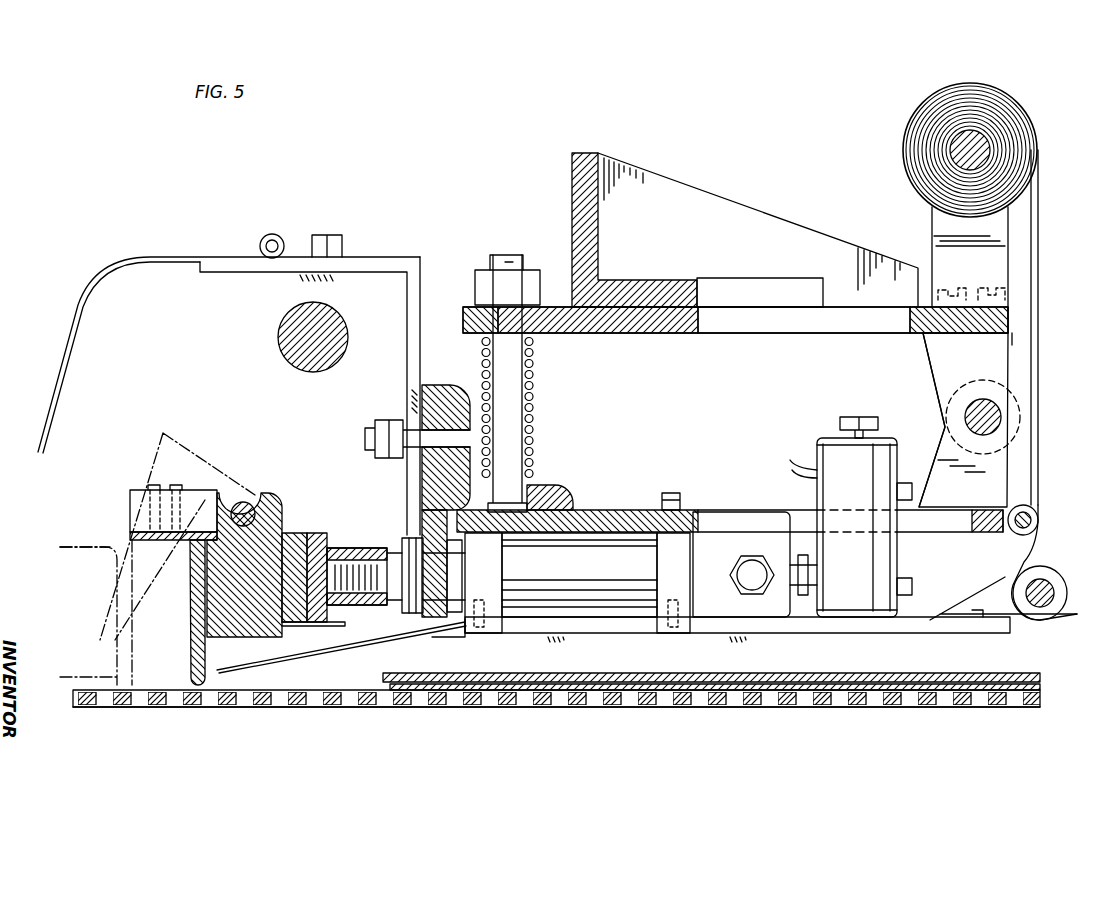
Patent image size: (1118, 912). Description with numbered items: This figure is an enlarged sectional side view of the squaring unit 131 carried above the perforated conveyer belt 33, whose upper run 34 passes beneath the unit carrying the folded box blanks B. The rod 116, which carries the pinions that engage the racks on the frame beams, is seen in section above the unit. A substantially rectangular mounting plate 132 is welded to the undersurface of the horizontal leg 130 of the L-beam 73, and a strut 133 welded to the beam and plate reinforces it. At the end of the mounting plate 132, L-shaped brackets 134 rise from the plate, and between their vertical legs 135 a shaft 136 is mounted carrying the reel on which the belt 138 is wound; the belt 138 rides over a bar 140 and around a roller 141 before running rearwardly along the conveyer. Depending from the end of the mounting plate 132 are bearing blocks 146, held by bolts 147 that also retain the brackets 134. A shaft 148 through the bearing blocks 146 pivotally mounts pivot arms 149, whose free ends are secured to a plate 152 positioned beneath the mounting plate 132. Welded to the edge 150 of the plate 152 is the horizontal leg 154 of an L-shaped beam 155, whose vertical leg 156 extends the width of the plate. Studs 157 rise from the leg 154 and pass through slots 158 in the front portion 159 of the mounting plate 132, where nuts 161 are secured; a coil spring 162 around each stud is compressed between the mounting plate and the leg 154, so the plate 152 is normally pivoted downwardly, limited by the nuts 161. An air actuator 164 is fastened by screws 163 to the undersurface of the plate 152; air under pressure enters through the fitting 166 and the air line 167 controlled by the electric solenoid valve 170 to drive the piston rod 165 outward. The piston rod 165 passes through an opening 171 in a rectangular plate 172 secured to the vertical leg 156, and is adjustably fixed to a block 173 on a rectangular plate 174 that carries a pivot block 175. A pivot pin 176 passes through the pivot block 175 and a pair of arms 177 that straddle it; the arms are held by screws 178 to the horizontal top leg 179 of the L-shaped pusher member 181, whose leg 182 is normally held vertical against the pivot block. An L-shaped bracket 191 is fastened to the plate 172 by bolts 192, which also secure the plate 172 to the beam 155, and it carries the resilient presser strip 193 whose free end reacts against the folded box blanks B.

The resilient presser strip 193 is at (140, 257).
The L-shaped bracket 191 is at (380, 254).
The rod 116 is at (290, 336).
The squaring unit 131 is at (497, 243).
The nuts 161 is at (480, 293).
The front portion 159 is at (548, 304).
The L-beam 73 is at (612, 194).
The struts 133 is at (684, 184).
The horizontal leg 130 is at (758, 278).
The belt 138 is at (917, 141).
The shaft 136 is at (971, 148).
The L-shaped brackets 134 is at (928, 216).
The vertical legs 135 is at (950, 258).
The bolts 147 is at (956, 290).
The slots 158 is at (590, 338).
The mounting plate 132 is at (768, 335).
The bearing blocks 146 is at (940, 348).
The shaft 148 is at (1000, 412).
The pivot arms 149 is at (940, 445).
The bar 140 is at (1026, 505).
The roller 141 is at (1040, 582).
The L-shaped beam 155 is at (450, 384).
The bolts 192 is at (376, 430).
The vertical leg 156 is at (458, 482).
The rectangular plate 172 is at (428, 460).
The studs 157 is at (508, 428).
The coil spring 162 is at (537, 372).
The horizontal leg 154 is at (552, 492).
The plate 152 is at (612, 507).
The screws 163 is at (678, 492).
The edge 150 is at (470, 520).
The air actuator 164 is at (624, 590).
The fitting 166 is at (793, 556).
The electric solenoid valve 170 is at (838, 465).
The air line 167 is at (903, 492).
The arms 177 is at (136, 500).
The screws 178 is at (155, 480).
The pivot pin 176 is at (244, 500).
The leg 182 is at (196, 626).
The L-shaped pusher member 181 is at (182, 609).
The horizontal top leg 179 is at (130, 550).
The rectangular plate 174 is at (300, 534).
The block 173 is at (327, 550).
The piston rod 165 is at (393, 568).
The pivot block 175 is at (248, 628).
The opening 171 is at (446, 630).
The folded box blanks B is at (880, 672).
The perforated conveyer belt 33 is at (483, 710).
The upper run 34 is at (757, 707).